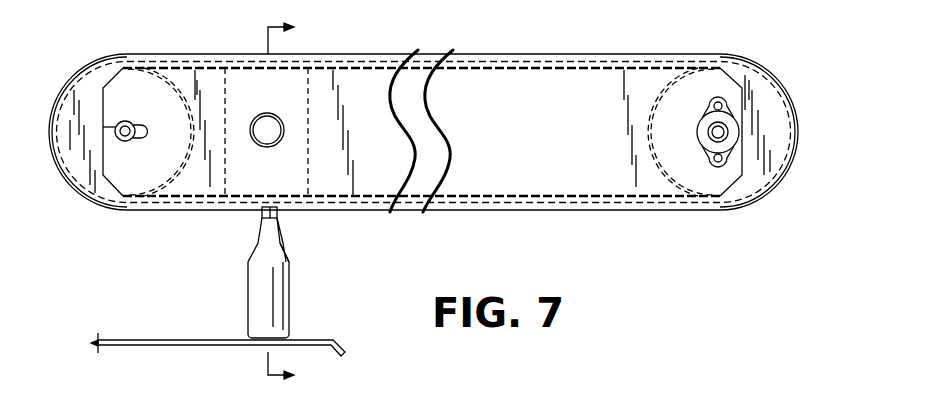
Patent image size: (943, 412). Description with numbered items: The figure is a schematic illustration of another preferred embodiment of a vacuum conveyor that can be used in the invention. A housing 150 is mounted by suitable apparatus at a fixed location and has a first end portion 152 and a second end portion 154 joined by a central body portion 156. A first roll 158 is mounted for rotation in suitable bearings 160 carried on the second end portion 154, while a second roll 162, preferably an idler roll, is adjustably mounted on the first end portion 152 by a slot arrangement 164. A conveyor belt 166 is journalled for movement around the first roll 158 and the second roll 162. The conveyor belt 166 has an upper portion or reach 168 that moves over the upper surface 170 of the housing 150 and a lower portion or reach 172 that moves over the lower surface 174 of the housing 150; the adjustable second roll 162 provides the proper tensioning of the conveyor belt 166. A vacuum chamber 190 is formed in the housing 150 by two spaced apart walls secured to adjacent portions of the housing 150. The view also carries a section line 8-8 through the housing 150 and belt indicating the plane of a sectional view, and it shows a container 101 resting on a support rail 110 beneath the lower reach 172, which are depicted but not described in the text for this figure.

The section line 8- 8 is at (290, 202).
The container (bottle) 101 is at (258, 318).
The conveyor / support rail 110 is at (120, 345).
The housing 150 is at (523, 147).
The first end portion 152 is at (220, 46).
The second end portion 154 is at (680, 37).
The central body portion 156 is at (405, 42).
The first roll 158 is at (763, 168).
The bearings 160 is at (707, 142).
The second roll 162 is at (77, 165).
The slot arrangement 164 is at (115, 128).
The conveyor belt 166 is at (503, 222).
The upper portion or reach 168 is at (550, 55).
The upper surface 170 is at (537, 68).
The lower portion or reach 172 is at (643, 210).
The lower surface 174 is at (623, 195).
The vacuum chamber 190 is at (287, 184).